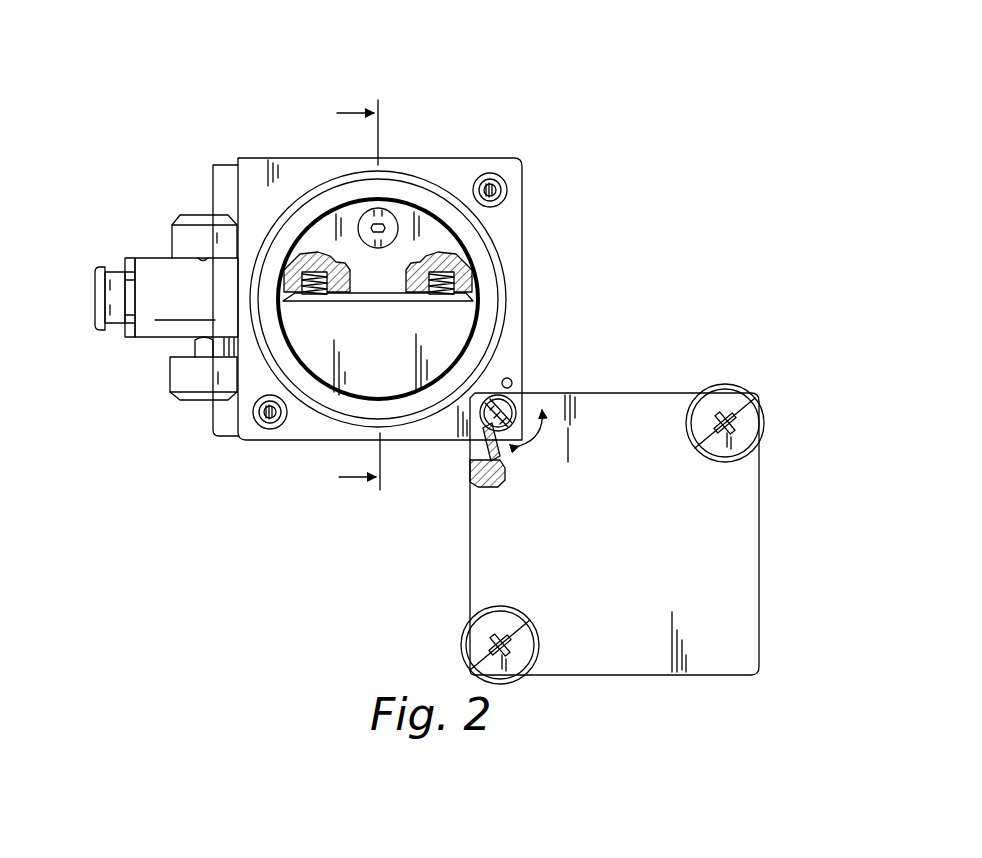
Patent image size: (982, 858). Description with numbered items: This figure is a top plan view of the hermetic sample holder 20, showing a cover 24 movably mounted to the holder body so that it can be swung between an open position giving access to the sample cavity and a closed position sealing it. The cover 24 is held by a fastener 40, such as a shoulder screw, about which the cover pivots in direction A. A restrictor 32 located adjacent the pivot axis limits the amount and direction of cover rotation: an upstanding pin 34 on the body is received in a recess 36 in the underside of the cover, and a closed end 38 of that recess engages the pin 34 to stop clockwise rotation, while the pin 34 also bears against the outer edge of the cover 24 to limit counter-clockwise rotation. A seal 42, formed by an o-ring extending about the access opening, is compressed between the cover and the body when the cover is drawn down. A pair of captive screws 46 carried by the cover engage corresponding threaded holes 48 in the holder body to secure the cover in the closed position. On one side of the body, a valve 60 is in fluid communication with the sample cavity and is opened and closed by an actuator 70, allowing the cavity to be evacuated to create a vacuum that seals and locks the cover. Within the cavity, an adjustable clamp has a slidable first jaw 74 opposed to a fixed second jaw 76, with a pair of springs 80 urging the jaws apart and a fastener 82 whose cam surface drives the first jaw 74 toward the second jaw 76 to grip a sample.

The hermetic sample holder 20 is at (542, 110).
The cover 24 is at (746, 520).
The restrictor 32 is at (510, 358).
The upstanding pin 34 is at (512, 380).
The recess 36 is at (482, 448).
The closed end 38 is at (497, 452).
The fastener 40 is at (514, 418).
The seal 42 is at (305, 203).
The captive screws 46 is at (765, 415).
The threaded holes 48 is at (503, 186).
The valve 60 is at (148, 260).
The actuator 70 is at (172, 377).
The first jaw 74 is at (395, 258).
The second jaw 76 is at (380, 327).
The springs 80 is at (308, 257).
The fastener 82 is at (380, 225).